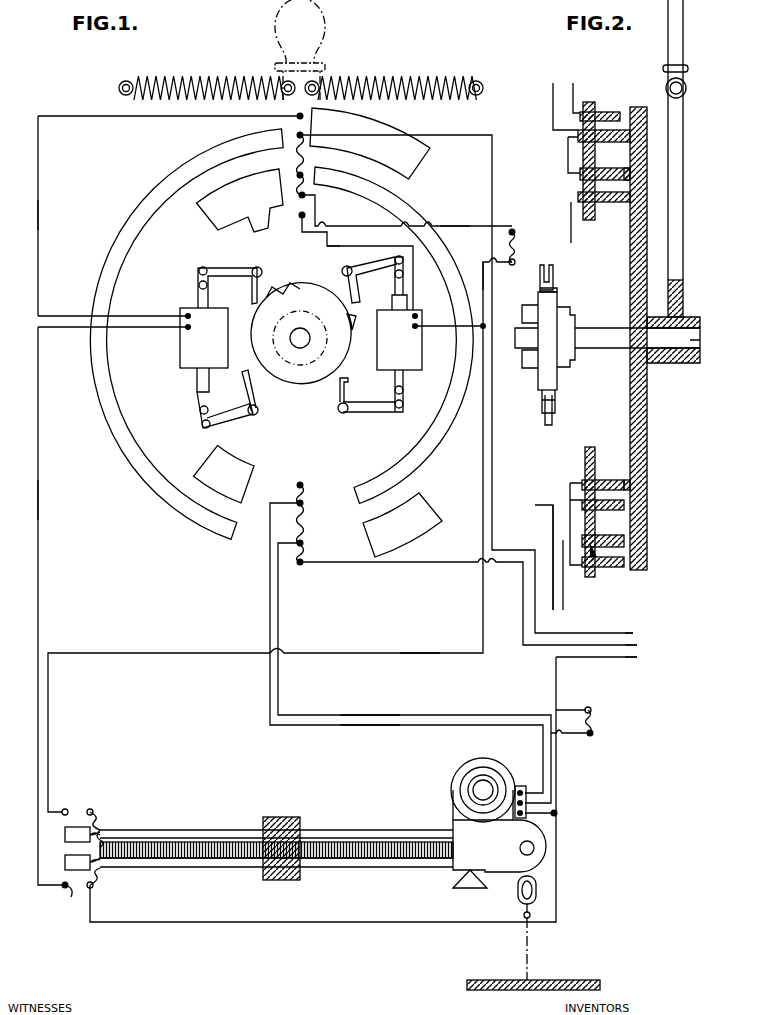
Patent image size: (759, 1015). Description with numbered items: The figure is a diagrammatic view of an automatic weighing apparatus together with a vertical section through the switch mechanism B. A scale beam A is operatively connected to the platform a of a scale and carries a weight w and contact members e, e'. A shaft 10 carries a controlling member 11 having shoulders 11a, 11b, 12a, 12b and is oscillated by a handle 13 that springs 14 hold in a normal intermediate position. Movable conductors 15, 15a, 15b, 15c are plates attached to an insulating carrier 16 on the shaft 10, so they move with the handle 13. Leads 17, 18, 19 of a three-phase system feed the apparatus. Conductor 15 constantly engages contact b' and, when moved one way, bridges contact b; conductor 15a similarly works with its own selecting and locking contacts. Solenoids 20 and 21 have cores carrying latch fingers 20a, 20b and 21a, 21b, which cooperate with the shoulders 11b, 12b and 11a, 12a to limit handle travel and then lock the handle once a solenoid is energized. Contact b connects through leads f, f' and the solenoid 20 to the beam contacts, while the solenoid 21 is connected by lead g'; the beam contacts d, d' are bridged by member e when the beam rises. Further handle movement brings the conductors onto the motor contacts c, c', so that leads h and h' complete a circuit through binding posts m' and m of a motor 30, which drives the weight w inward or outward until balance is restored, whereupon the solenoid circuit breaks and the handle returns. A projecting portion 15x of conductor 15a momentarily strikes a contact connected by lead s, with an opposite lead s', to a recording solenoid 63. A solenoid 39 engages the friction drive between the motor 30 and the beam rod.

In FIG. 1, the springs 14 is at (192, 72).
In FIG. 2, the springs 14 is at (666, 86).
In FIG. 1, the handle 13 is at (318, 48).
In FIG. 2, the handle 13 is at (672, 38).
In FIG. 1, the switch mechanism B is at (376, 143).
In FIG. 1, the contact b is at (294, 108).
In FIG. 2, the contact b is at (600, 103).
In FIG. 1, the contact b' is at (316, 128).
In FIG. 2, the contact b' is at (604, 146).
In FIG. 1, the movable conductor 15 is at (92, 388).
In FIG. 2, the movable conductor 15 is at (648, 137).
In FIG. 1, the movable conductor 15a is at (430, 446).
In FIG. 2, the movable conductor 15a is at (648, 173).
In FIG. 1, the movable conductor 15b is at (230, 466).
In FIG. 2, the movable conductor 15b is at (648, 475).
In FIG. 1, the movable conductor 15c is at (417, 533).
In FIG. 1, the projecting portion 15x is at (228, 218).
In FIG. 2, the insulating carrier 16 is at (649, 425).
In FIG. 2, the lead 17 is at (550, 102).
In FIG. 2, the lead 18 is at (588, 572).
In FIG. 2, the lead 19 is at (636, 658).
In FIG. 1, the lead f is at (46, 215).
In FIG. 2, the lead f is at (582, 90).
In FIG. 1, the lead f' is at (47, 500).
In FIG. 1, the solenoid 20 is at (204, 338).
In FIG. 1, the upper finger 20a is at (252, 292).
In FIG. 2, the upper finger 20a is at (540, 278).
In FIG. 1, the lower finger 20b is at (250, 404).
In FIG. 2, the lower finger 20b is at (542, 410).
In FIG. 1, the solenoid 21 is at (431, 340).
In FIG. 1, the finger 21a is at (365, 283).
In FIG. 1, the finger 21b is at (348, 386).
In FIG. 1, the shaft 10 is at (304, 348).
In FIG. 2, the shaft 10 is at (604, 345).
In FIG. 1, the controlling member 11 is at (287, 382).
In FIG. 2, the controlling member 11 is at (538, 380).
In FIG. 1, the shoulder 11a is at (250, 318).
In FIG. 1, the shoulder 11b is at (276, 290).
In FIG. 1, the shoulder 12a is at (312, 330).
In FIG. 2, the shoulder 12a is at (539, 312).
In FIG. 1, the shoulder 12b is at (322, 292).
In FIG. 2, the shoulder 12b is at (556, 290).
In FIG. 1, the lead g' is at (337, 253).
In FIG. 2, the lead g' is at (558, 222).
In FIG. 1, the lead s is at (455, 217).
In FIG. 1, the lead s' is at (470, 272).
In FIG. 1, the solenoid 63 is at (516, 226).
In FIG. 1, the contact c is at (308, 472).
In FIG. 2, the contact c is at (603, 480).
In FIG. 1, the contact c' is at (287, 492).
In FIG. 2, the contact c' is at (603, 458).
In FIG. 1, the lead h is at (370, 701).
In FIG. 2, the lead h is at (569, 587).
In FIG. 1, the lead h' is at (370, 740).
In FIG. 2, the lead h' is at (539, 557).
In FIG. 1, the motor 30 is at (455, 778).
In FIG. 1, the binding post m is at (519, 786).
In FIG. 1, the binding post m' is at (499, 846).
In FIG. 1, the scale beam A is at (510, 862).
In FIG. 1, the platform a is at (574, 978).
In FIG. 1, the weight w is at (282, 822).
In FIG. 1, the contact member e is at (58, 825).
In FIG. 1, the contact member e' is at (54, 857).
In FIG. 1, the contact d is at (69, 800).
In FIG. 1, the contact d' is at (103, 806).
In FIG. 1, the solenoid 39 is at (594, 734).